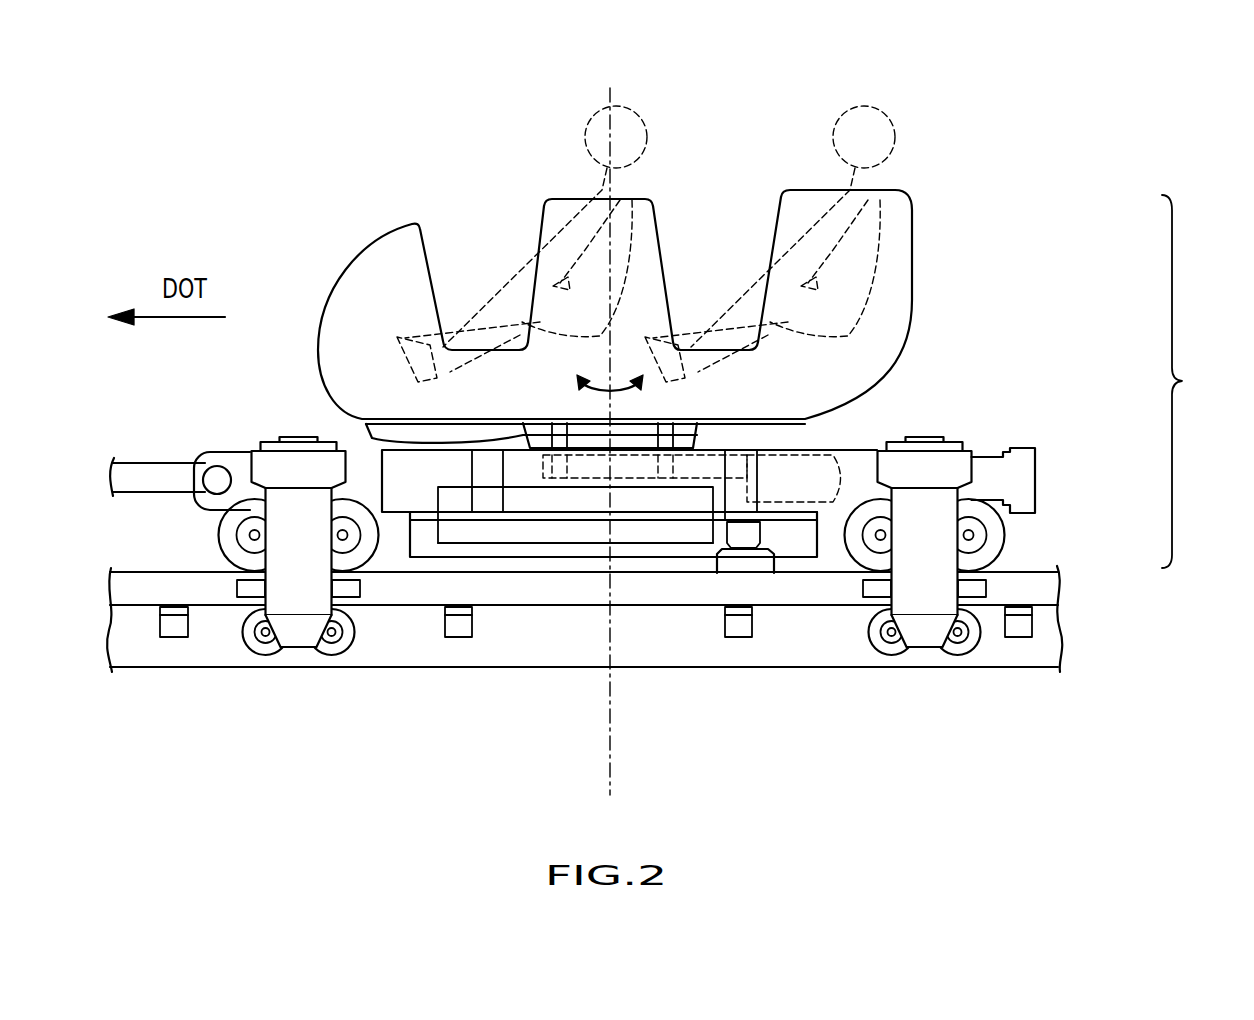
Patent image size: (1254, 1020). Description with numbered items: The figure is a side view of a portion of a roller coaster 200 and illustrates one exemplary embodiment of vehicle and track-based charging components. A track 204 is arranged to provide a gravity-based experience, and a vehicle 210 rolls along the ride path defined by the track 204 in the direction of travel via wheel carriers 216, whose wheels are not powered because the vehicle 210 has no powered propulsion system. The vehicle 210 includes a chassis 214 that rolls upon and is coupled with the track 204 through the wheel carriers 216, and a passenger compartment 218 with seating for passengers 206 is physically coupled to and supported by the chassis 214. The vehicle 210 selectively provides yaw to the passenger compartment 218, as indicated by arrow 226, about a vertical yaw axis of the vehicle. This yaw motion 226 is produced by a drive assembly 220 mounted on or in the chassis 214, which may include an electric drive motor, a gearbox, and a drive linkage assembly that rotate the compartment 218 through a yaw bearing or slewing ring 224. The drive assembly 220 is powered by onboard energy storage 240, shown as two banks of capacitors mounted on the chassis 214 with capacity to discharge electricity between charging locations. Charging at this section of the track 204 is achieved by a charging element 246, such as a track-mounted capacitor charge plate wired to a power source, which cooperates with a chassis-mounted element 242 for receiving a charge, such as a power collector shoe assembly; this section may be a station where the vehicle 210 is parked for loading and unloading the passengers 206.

The roller coaster 200 is at (219, 139).
The track 204 is at (165, 668).
The passengers 206 is at (853, 180).
The vehicle 210 is at (1192, 381).
The chassis 214 is at (430, 484).
The wheel carriers 216 is at (315, 576).
The passenger compartment 218 is at (909, 283).
The drive assembly 220 is at (835, 460).
The yaw bearing or slewing ring 224 is at (363, 438).
The yaw motion arrow 226 is at (645, 402).
The onboard energy storage 240 is at (467, 530).
The chassis-mounted charge-receiving element 242 is at (738, 532).
The charging element 246 is at (760, 565).